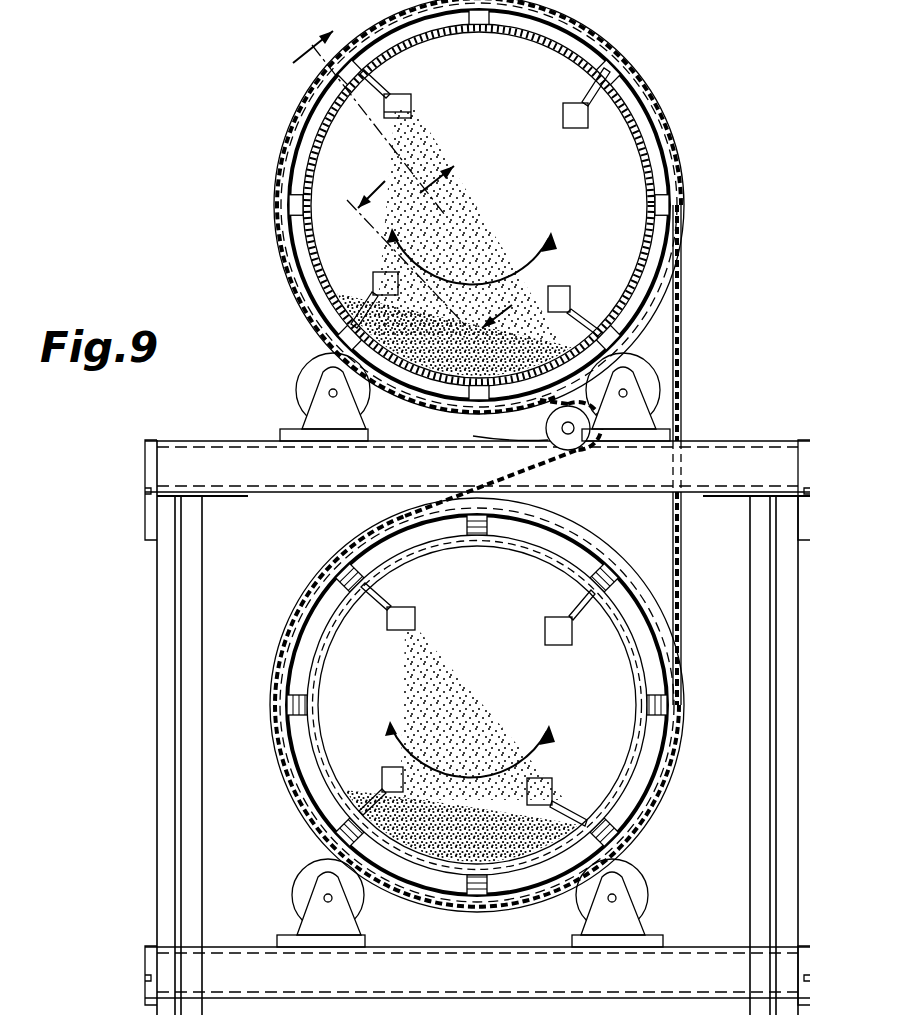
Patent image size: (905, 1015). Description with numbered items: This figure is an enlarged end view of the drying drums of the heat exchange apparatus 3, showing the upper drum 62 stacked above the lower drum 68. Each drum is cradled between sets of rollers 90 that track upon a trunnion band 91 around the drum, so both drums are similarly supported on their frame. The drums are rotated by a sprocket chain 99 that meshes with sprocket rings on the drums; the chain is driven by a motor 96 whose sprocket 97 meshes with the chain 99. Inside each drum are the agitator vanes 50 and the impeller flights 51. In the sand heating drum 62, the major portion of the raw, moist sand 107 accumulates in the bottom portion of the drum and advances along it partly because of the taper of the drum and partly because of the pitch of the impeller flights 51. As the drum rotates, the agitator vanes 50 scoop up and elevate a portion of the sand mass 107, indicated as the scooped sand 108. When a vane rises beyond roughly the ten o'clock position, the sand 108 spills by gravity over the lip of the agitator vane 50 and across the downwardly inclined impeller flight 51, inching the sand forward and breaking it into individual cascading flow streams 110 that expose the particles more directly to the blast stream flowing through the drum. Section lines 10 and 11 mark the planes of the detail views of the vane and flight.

The heat exchange apparatus 3 is at (708, 287).
The section line 10- 10 is at (438, 243).
The section line 11- 11 is at (385, 111).
The agitator vane 50 is at (588, 88).
The impeller flight 51 is at (582, 128).
The upper drum 62 is at (648, 130).
The lower drum 68 is at (648, 744).
The rollers 90 is at (360, 404).
The trunnion band 91 is at (683, 222).
The motor 96 is at (548, 430).
The sprocket 97 is at (496, 432).
The sprocket chain 99 is at (682, 548).
The sand mass 107 is at (553, 337).
The scooped sand 108 is at (345, 288).
The cascading flow streams 110 is at (430, 630).